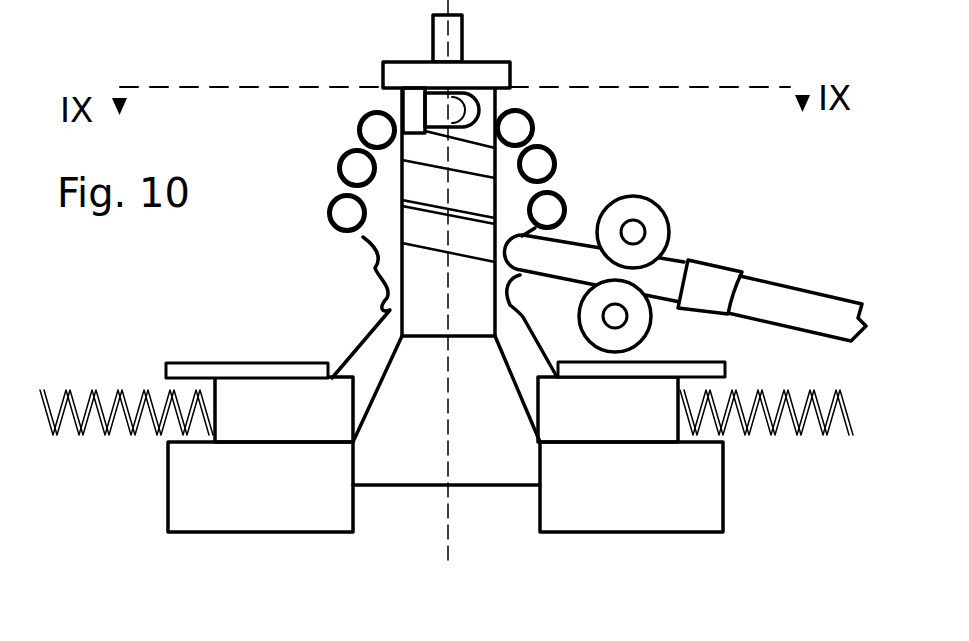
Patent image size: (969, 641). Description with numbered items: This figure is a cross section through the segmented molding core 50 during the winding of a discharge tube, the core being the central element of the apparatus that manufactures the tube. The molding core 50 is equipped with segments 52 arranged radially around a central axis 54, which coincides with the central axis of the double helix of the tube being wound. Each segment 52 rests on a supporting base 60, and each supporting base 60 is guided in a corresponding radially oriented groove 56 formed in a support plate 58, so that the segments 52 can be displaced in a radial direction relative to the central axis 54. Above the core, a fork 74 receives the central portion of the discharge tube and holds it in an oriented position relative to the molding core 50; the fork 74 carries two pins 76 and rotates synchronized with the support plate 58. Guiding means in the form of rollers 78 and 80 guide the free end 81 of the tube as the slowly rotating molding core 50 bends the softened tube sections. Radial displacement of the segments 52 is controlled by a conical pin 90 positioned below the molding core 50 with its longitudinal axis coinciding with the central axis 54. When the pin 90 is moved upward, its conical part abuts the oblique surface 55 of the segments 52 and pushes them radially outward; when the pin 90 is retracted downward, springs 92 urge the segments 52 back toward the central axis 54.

The molding core 50 is at (606, 119).
The segments 52 is at (385, 215).
The central axis 54 is at (448, 517).
The oblique surface 55 is at (374, 388).
The grooves 56 is at (162, 377).
The support plate 58 is at (205, 503).
The supporting base 60 is at (277, 403).
The fork 74 is at (494, 74).
The pins 76 is at (402, 104).
The roller 78 is at (710, 272).
The roller 80 is at (590, 303).
The free end 81 is at (770, 280).
The conical pin 90 is at (482, 447).
The springs 92 is at (136, 437).